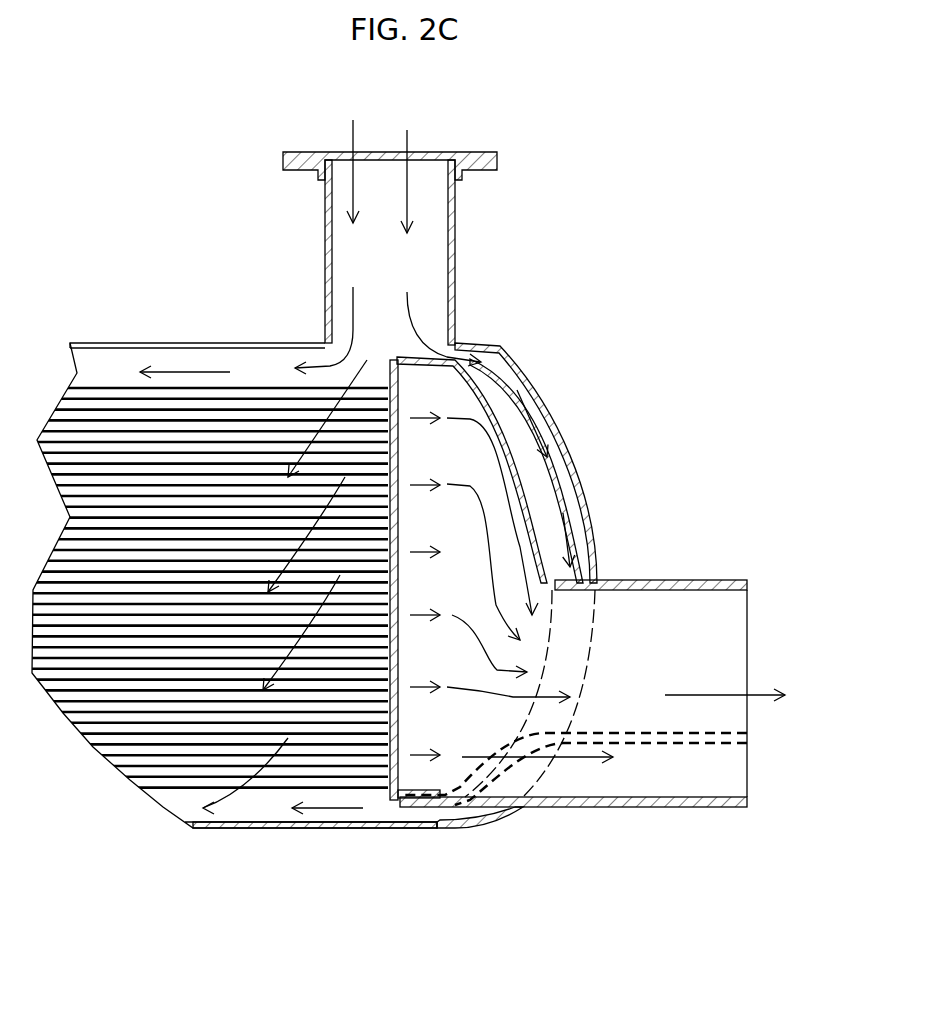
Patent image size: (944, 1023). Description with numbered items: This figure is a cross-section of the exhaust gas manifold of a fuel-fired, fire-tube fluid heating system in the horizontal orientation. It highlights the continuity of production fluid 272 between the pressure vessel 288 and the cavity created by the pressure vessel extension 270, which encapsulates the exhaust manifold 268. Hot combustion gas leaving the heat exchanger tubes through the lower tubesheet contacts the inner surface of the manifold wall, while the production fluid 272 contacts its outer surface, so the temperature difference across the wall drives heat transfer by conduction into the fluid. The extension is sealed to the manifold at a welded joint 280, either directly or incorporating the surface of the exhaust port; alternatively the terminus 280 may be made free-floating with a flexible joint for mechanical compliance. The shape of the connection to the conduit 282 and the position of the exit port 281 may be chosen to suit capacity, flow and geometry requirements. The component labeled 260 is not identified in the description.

The inlet pipe 260 is at (353, 130).
The exhaust manifold 268 is at (495, 388).
The pressure vessel extension 270 is at (563, 410).
The production fluid 272 is at (560, 490).
The joint 280 is at (600, 578).
The exit port 281 is at (570, 737).
The conduit 282 is at (460, 826).
The pressure vessel 288 is at (263, 803).